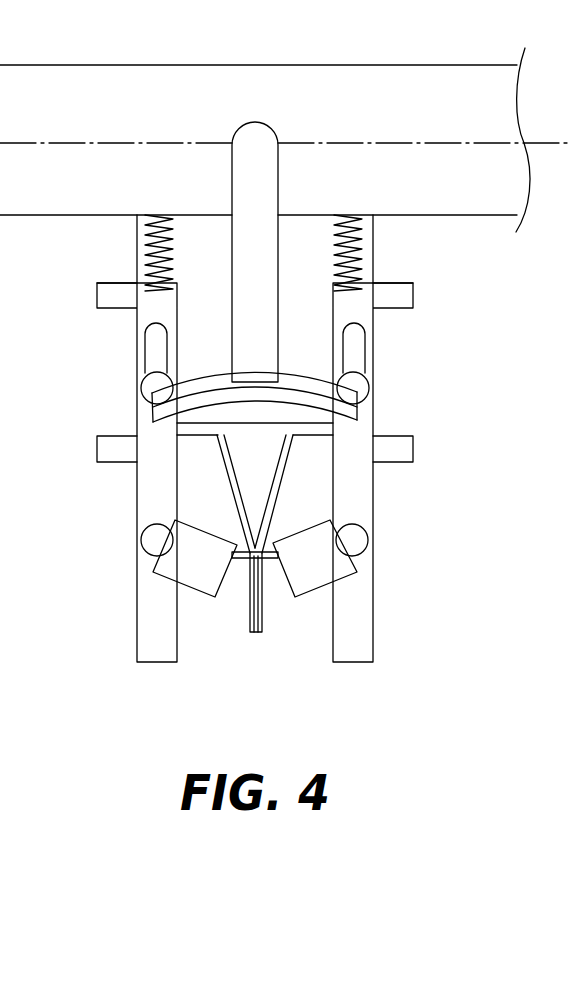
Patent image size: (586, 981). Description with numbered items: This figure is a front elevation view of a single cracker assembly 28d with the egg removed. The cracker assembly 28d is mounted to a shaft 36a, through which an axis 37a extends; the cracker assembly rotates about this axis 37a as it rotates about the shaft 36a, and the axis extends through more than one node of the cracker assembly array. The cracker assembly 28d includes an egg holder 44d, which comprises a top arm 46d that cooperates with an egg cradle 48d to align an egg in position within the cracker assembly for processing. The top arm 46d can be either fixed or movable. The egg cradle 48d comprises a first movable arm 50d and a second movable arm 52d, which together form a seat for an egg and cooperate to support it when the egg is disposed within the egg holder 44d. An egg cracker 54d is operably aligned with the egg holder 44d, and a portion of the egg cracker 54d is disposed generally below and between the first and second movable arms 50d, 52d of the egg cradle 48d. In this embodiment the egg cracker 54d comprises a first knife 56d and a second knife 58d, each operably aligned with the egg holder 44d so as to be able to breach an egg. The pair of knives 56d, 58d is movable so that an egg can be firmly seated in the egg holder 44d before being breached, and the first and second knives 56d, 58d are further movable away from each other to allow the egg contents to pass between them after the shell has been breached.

The shaft 36a is at (347, 83).
The axis 37a is at (531, 143).
The top arm 46d is at (243, 312).
The cracker assembly 28d is at (454, 374).
The egg holder 44d is at (427, 468).
The egg cradle 48d is at (97, 532).
The first movable arm 50d is at (163, 572).
The second movable arm 52d is at (310, 587).
The egg cracker 54d is at (240, 644).
The first knife 56d is at (247, 603).
The second knife 58d is at (264, 630).